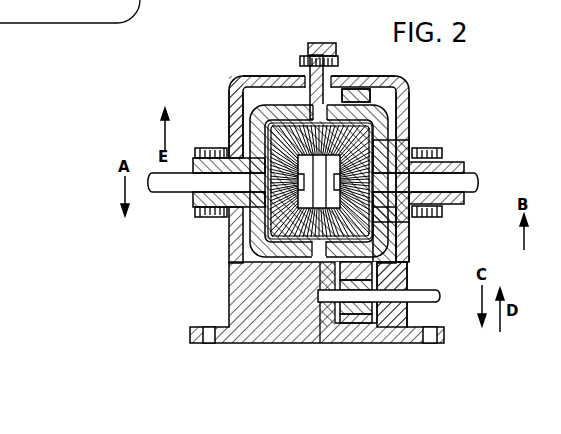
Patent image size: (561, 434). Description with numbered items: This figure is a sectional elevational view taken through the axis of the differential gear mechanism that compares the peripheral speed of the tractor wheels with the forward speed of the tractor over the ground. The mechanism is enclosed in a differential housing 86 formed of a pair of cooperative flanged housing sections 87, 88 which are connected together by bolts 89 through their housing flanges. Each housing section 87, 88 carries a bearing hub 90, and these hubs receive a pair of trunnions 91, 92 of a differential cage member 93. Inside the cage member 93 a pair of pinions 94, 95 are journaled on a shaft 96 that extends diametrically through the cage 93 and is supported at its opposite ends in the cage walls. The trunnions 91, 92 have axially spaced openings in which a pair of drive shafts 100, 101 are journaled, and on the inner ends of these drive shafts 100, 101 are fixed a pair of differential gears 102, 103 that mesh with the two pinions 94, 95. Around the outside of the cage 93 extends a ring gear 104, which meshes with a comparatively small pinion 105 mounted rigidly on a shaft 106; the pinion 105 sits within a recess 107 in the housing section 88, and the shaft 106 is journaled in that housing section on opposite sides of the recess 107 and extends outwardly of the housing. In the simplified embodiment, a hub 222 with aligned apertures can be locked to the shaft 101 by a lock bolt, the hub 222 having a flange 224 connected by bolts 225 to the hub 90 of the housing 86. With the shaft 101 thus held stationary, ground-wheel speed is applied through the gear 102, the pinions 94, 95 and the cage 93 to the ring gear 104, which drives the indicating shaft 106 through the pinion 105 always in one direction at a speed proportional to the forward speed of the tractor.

The differential housing 86 is at (410, 84).
The housing section 87 is at (262, 77).
The housing section 88 is at (382, 78).
The bolts 89 is at (332, 60).
The bearing hub 90 is at (228, 148).
The trunnion 91 is at (228, 213).
The trunnion 92 is at (415, 204).
The differential cage member 93 is at (385, 128).
The pinion 94 is at (290, 128).
The pinion 95 is at (290, 228).
The shaft 96 is at (318, 112).
The drive shaft 100 is at (175, 186).
The drive shaft 101 is at (478, 183).
The differential gear 102 is at (243, 145).
The differential gear 103 is at (364, 138).
The ring gear 104 is at (358, 92).
The pinion 105 is at (366, 283).
The shaft 106 is at (435, 297).
The recess 107 is at (378, 321).
The hub 222 is at (462, 172).
The flange 224 is at (438, 162).
The bolts 225 is at (440, 214).